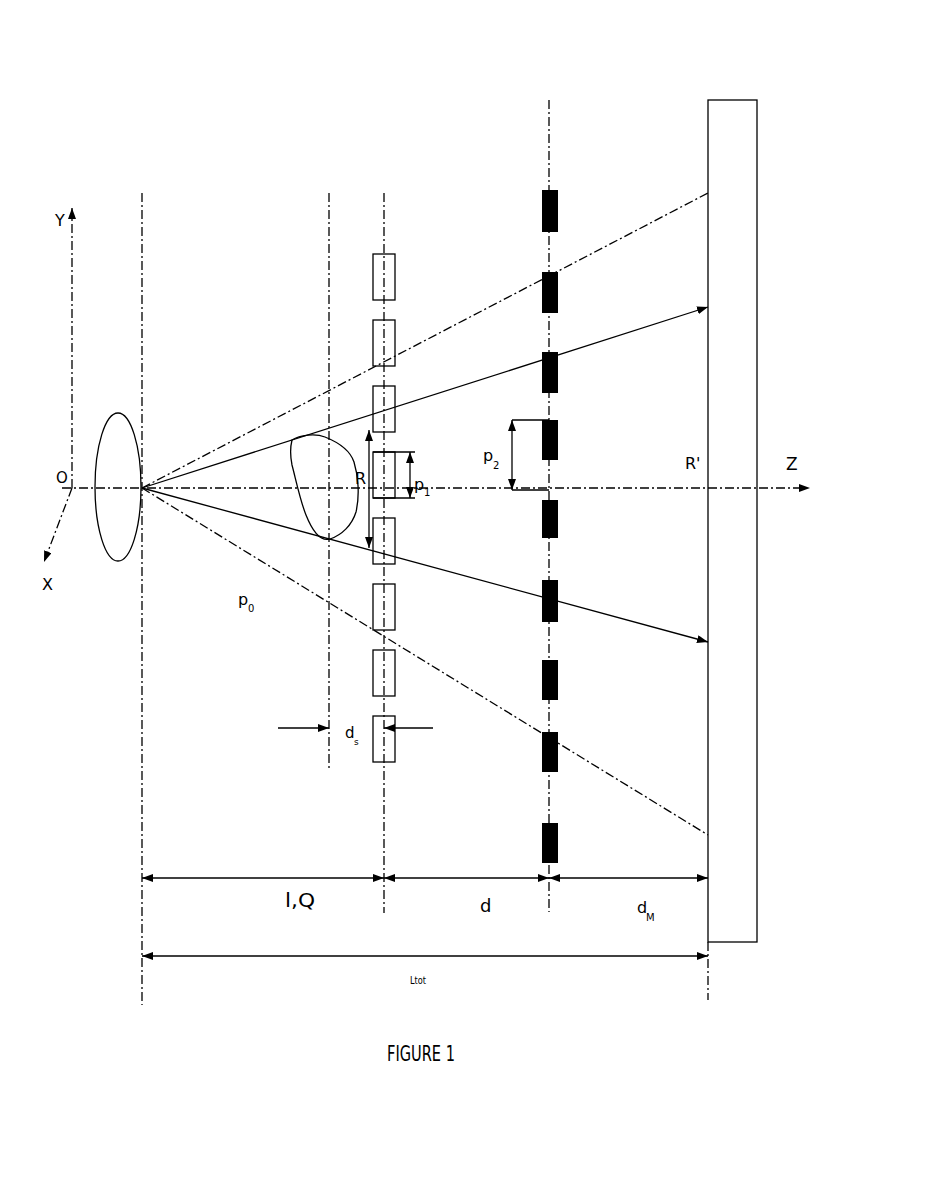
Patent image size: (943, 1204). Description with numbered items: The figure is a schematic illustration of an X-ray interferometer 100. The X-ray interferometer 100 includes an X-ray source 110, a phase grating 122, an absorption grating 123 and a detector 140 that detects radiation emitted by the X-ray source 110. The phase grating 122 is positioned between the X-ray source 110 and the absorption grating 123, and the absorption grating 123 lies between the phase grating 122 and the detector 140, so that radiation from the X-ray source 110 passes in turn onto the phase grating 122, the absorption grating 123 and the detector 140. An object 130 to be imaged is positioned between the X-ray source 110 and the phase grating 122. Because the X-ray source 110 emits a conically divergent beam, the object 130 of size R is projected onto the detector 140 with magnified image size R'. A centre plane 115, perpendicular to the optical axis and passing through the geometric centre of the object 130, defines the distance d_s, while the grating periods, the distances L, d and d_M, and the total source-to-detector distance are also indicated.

The X-ray interferometer 100 is at (212, 178).
The X-ray source 110 is at (113, 416).
The centre plane 115 is at (329, 263).
The phase grating 122 is at (386, 253).
The absorption grating 123 is at (550, 190).
The object 130 is at (292, 440).
The detector 140 is at (730, 100).